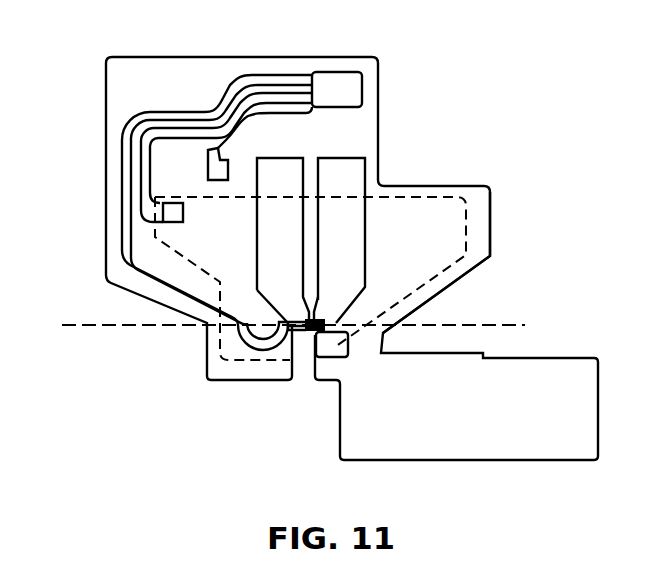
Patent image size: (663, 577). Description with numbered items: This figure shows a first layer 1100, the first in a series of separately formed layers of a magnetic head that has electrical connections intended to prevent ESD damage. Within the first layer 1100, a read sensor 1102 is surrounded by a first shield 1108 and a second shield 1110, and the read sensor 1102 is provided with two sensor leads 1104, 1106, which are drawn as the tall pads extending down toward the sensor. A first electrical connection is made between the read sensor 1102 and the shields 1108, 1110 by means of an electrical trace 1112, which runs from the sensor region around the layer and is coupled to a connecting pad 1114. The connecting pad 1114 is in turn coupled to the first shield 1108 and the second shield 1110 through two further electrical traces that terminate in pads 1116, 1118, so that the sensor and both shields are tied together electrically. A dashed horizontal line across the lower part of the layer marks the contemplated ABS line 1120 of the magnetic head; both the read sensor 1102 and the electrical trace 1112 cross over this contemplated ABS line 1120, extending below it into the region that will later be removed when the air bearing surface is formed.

The first layer 1100 is at (432, 96).
The read sensor 1102 is at (306, 317).
The sensor lead 1104 is at (273, 243).
The sensor lead 1106 is at (348, 260).
The first shield 1108 is at (477, 203).
The second shield 1110 is at (400, 197).
The electrical trace 1112 is at (123, 186).
The connecting pad 1114 is at (340, 77).
The pad 1116 is at (209, 178).
The pad 1118 is at (184, 210).
The contemplated ABS line 1120 is at (110, 325).